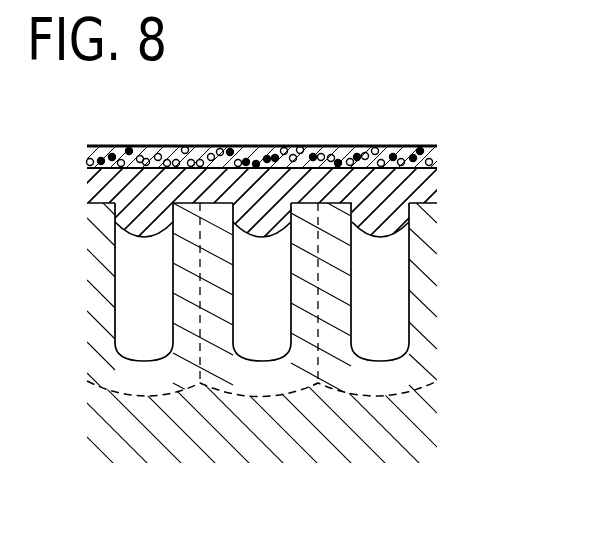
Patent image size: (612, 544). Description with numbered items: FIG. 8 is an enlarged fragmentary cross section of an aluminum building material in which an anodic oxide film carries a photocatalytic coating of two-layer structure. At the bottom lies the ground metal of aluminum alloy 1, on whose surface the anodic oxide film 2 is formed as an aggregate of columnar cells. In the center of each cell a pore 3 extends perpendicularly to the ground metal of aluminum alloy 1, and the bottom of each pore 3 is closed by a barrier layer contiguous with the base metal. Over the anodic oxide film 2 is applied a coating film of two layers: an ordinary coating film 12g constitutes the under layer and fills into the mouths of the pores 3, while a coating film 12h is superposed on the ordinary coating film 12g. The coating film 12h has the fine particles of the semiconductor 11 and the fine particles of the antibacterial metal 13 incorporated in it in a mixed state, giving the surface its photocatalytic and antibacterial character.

The ground metal of aluminum alloy 1 is at (432, 430).
The anodic oxide film 2 is at (463, 208).
The pore 3 is at (272, 312).
The fine particles of the semiconductor 11 is at (327, 146).
The ordinary coating film 12g is at (430, 183).
The coating film 12h is at (427, 152).
The fine particles of the antibacterial metal 13 is at (182, 146).